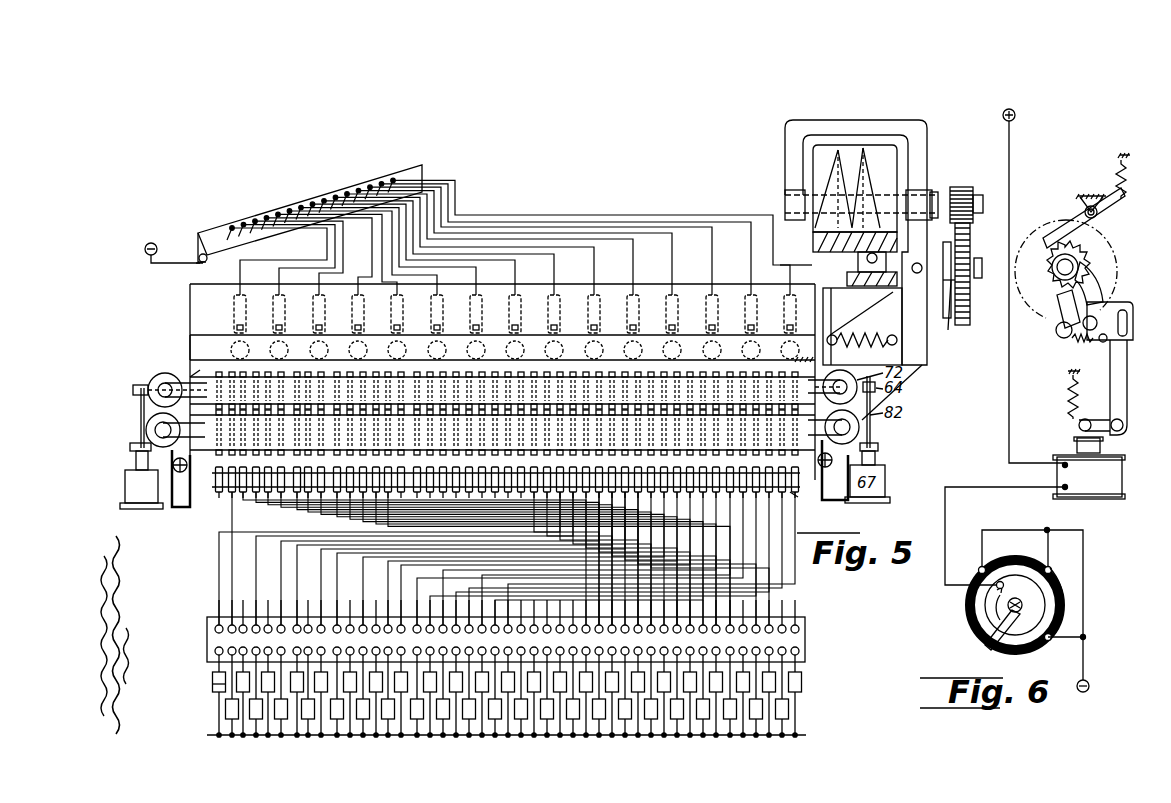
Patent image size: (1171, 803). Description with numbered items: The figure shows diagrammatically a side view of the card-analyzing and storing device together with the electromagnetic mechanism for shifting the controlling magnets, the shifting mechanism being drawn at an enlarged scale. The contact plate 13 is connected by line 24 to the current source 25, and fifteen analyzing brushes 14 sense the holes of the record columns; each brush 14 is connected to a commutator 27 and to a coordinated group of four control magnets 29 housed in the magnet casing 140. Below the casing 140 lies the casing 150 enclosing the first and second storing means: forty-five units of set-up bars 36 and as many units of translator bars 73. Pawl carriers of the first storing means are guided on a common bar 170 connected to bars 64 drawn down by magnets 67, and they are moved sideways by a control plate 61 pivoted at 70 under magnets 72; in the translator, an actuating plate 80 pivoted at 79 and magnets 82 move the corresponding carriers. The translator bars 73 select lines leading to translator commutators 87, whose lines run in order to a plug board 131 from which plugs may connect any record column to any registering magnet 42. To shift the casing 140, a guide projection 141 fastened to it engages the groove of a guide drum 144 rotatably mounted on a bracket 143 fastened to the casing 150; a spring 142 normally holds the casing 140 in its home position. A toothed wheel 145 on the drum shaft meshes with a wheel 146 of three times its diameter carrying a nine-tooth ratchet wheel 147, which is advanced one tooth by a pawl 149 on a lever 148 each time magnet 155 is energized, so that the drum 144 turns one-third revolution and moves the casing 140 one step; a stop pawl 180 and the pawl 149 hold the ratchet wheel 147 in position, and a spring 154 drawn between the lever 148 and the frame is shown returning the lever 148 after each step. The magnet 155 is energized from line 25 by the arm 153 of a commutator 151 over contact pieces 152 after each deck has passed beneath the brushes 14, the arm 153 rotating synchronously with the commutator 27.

In FIG. 5, the contact plate 13 is at (214, 236).
In FIG. 5, the analyzing brush 14 is at (308, 212).
In FIG. 5, the line 24 is at (172, 263).
In FIG. 5, the current source 25 is at (207, 735).
In FIG. 6, the current source 25 is at (1085, 655).
In FIG. 5, the commutator 27 is at (476, 296).
In FIG. 5, the control magnets 29 is at (517, 342).
In FIG. 5, the set-up bars 36 is at (221, 358).
In FIG. 5, the registering magnets 42 is at (229, 704).
In FIG. 5, the control plate 61 is at (195, 378).
In FIG. 5, the bars 64 is at (135, 448).
In FIG. 5, the magnets 67 is at (141, 489).
In FIG. 5, the pivot 70 is at (140, 415).
In FIG. 5, the magnets 72 is at (150, 380).
In FIG. 5, the translator set-up bars 73 is at (245, 432).
In FIG. 5, the pivot 79 is at (182, 506).
In FIG. 5, the actuating plate 80 is at (858, 427).
In FIG. 5, the magnets 82 is at (146, 430).
In FIG. 5, the translator commutator 87 is at (800, 494).
In FIG. 5, the plug board 131 is at (207, 634).
In FIG. 5, the magnet casing 140 is at (647, 285).
In FIG. 5, the guide projection 141 is at (855, 268).
In FIG. 5, the spring 142 is at (858, 325).
In FIG. 5, the bracket 143 is at (917, 134).
In FIG. 5, the guide drum 144 is at (877, 150).
In FIG. 5, the toothed wheel 145 is at (962, 186).
In FIG. 5, the wheel 146 is at (965, 320).
In FIG. 5, the ratchet wheel 147 is at (945, 295).
In FIG. 6, the ratchet wheel 147 is at (1080, 255).
In FIG. 5, the lever 148 is at (958, 318).
In FIG. 6, the lever 148 is at (1103, 300).
In FIG. 5, the pawl 149 is at (961, 297).
In FIG. 6, the pawl 149 is at (1062, 310).
In FIG. 5, the casing 150 is at (845, 500).
In FIG. 6, the commutator 151 is at (965, 612).
In FIG. 6, the contact pieces 152 is at (985, 568).
In FIG. 6, the contact arm 153 is at (984, 644).
In FIG. 6, the return spring 154 is at (1110, 360).
In FIG. 6, the magnet 155 is at (1089, 477).
In FIG. 5, the common bar 170 is at (205, 368).
In FIG. 6, the stop pawl 180 is at (1060, 228).